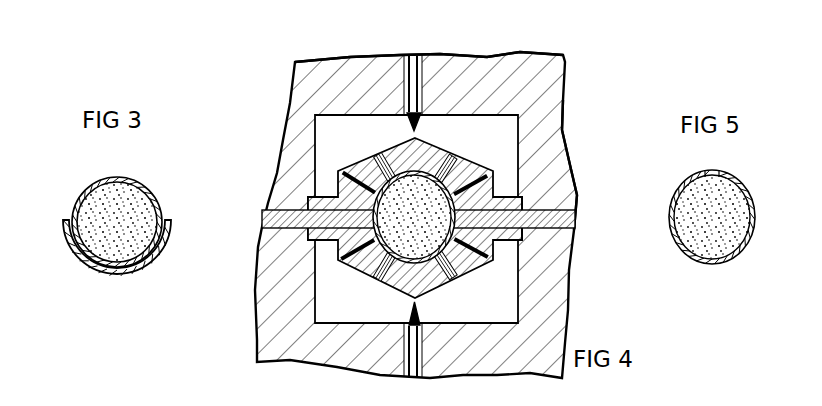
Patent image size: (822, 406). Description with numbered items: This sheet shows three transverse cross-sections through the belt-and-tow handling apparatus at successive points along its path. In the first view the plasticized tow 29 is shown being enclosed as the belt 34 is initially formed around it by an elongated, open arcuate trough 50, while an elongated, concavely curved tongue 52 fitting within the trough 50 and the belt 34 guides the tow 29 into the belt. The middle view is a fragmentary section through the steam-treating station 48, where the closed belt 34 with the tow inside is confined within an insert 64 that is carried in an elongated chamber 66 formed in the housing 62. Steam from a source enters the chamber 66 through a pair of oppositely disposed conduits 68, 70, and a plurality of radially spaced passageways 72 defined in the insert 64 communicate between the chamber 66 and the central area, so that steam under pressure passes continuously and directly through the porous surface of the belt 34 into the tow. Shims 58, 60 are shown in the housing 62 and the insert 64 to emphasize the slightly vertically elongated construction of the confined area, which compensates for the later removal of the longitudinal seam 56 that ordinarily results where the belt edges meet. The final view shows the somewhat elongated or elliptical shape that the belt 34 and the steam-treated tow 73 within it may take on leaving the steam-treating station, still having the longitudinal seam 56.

In FIG. 3, the plasticized tow 29 is at (147, 215).
In FIG. 3, the belt 34 is at (77, 200).
In FIG. 4, the belt 34 is at (407, 278).
In FIG. 5, the belt 34 is at (745, 191).
In FIG. 4, the steam-treating station 48 is at (532, 65).
In FIG. 3, the arcuate trough 50 is at (73, 240).
In FIG. 3, the tongue 52 is at (132, 172).
In FIG. 4, the longitudinal seam 56 is at (412, 171).
In FIG. 5, the longitudinal seam 56 is at (712, 168).
In FIG. 4, the shim 58 is at (578, 188).
In FIG. 4, the shim 60 is at (498, 232).
In FIG. 4, the housing 62 is at (566, 133).
In FIG. 4, the insert 64 is at (373, 163).
In FIG. 4, the chamber 66 is at (503, 119).
In FIG. 4, the conduit 68 is at (424, 92).
In FIG. 4, the conduit 70 is at (431, 364).
In FIG. 4, the passageways 72 is at (453, 177).
In FIG. 4, the steam-treated tow 73 is at (458, 263).
In FIG. 5, the steam-treated tow 73 is at (690, 195).